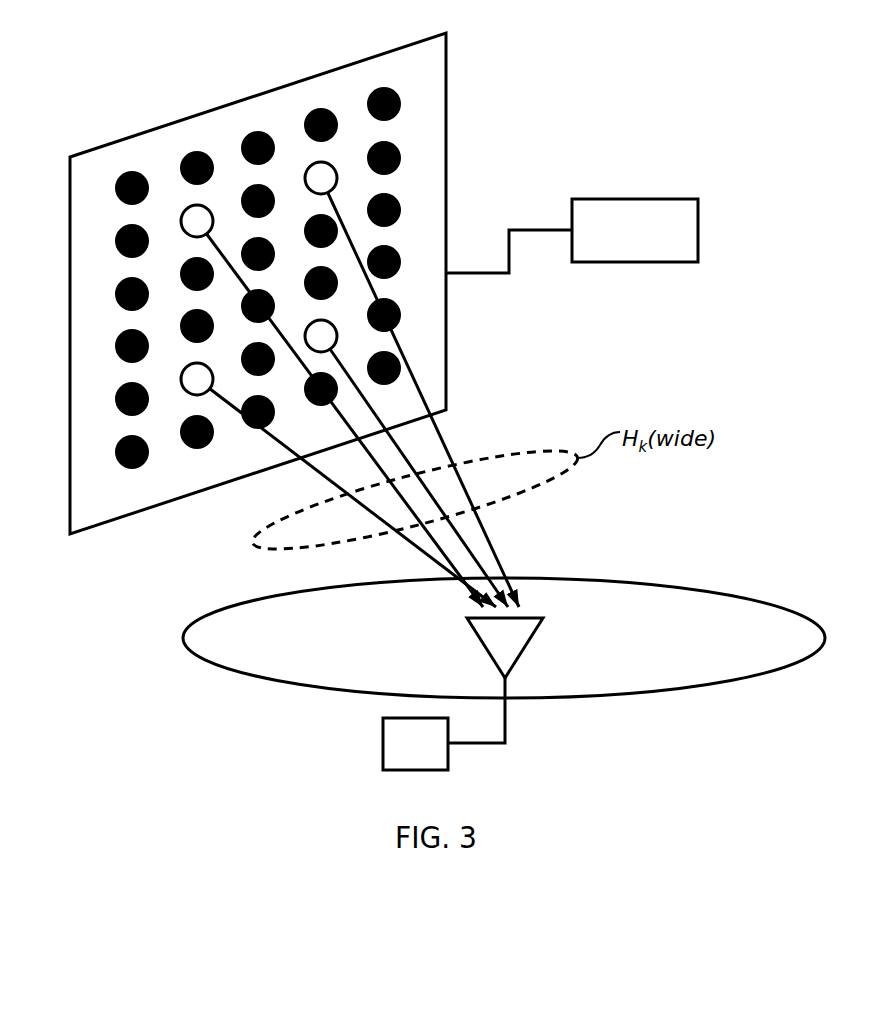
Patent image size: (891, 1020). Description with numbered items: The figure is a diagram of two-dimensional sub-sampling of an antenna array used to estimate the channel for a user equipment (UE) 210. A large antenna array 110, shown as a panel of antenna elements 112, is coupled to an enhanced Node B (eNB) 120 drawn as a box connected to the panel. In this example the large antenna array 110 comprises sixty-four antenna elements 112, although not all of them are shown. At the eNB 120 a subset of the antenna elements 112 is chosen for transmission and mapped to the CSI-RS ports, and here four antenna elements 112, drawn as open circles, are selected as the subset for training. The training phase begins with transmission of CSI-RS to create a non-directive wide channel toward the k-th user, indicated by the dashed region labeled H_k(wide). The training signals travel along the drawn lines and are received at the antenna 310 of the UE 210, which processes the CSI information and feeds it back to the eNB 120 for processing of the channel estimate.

The large antenna array 110 is at (446, 51).
The antenna elements 112 is at (401, 156).
The enhanced Node B (eNB) 120 is at (698, 213).
The user equipment (UE) 210 is at (383, 744).
The antenna 310 is at (543, 623).